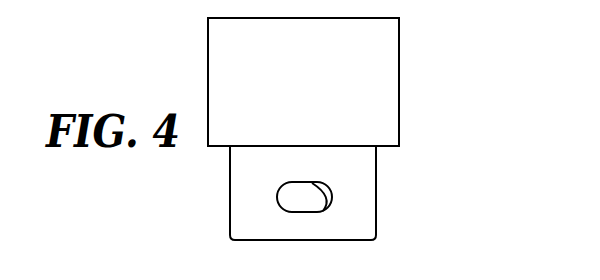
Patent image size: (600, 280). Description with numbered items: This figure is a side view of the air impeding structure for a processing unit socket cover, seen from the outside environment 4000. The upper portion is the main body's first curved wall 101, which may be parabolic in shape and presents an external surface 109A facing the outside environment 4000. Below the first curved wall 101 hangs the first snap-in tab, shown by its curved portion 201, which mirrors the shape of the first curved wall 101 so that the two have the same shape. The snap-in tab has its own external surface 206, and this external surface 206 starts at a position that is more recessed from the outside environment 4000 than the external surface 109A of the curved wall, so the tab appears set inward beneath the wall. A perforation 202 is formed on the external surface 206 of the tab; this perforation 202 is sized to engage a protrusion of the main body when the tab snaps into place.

The outside environment 4000 is at (182, 75).
The first curved wall 101 is at (399, 79).
The external surface 109A is at (332, 97).
The curved portion 201 is at (230, 190).
The external surface 206 is at (362, 167).
The perforation 202 is at (332, 206).